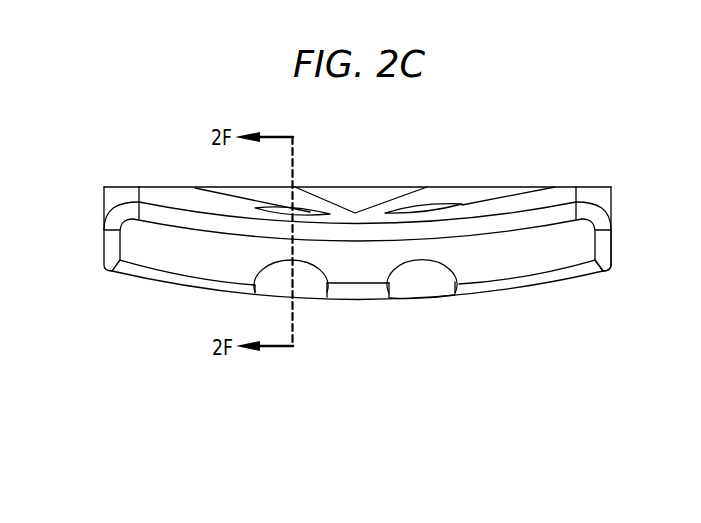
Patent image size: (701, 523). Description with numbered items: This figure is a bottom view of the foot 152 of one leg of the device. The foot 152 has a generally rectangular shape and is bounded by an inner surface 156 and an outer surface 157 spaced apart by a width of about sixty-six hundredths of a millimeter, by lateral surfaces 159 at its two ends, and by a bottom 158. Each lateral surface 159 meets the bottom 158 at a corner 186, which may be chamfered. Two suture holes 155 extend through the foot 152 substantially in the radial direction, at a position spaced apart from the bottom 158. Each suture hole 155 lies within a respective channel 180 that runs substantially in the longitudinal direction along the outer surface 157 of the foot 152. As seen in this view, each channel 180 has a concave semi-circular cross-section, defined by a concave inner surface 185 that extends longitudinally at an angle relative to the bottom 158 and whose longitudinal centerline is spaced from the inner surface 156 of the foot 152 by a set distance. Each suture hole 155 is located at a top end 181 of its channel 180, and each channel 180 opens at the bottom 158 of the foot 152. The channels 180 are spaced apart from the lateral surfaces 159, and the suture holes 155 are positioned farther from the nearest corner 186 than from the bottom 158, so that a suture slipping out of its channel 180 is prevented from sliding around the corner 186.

The foot 152 is at (127, 242).
The suture hole 155 is at (433, 205).
The inner surface 156 is at (542, 196).
The outer surface 157 is at (540, 284).
The bottom 158 is at (171, 252).
The lateral surface 159 is at (612, 250).
The channel 180 is at (443, 278).
The top end 181 is at (420, 280).
The inner surface 185 is at (397, 286).
The corner 186 is at (609, 271).